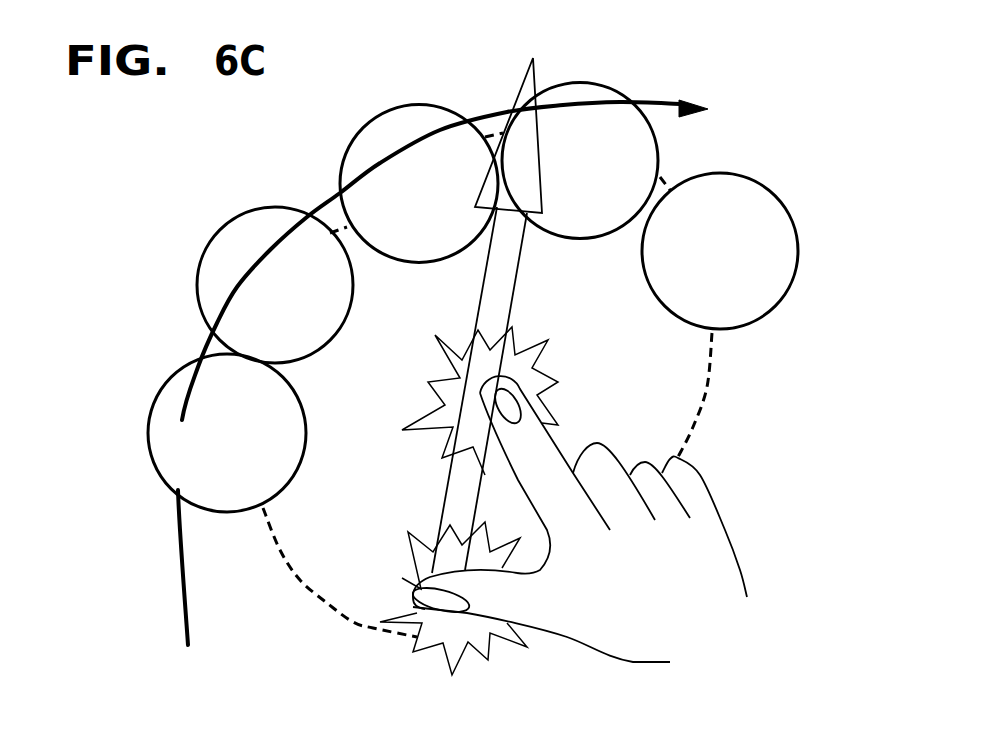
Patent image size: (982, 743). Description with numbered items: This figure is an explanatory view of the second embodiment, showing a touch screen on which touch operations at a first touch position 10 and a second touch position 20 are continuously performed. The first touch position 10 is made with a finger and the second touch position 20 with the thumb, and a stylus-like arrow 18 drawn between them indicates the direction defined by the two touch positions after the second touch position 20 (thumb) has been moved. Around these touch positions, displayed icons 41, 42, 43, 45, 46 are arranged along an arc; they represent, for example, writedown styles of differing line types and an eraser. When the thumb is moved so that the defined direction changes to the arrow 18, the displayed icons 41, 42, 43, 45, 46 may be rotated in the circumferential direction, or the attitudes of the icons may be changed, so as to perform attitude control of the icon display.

The first touch position 10 is at (558, 378).
The arrow 18 is at (518, 87).
The second touch position 20 is at (463, 660).
The icon 41 is at (343, 150).
The icon 42 is at (660, 150).
The icon 43 is at (763, 317).
The icon 45 is at (225, 512).
The icon 46 is at (197, 295).